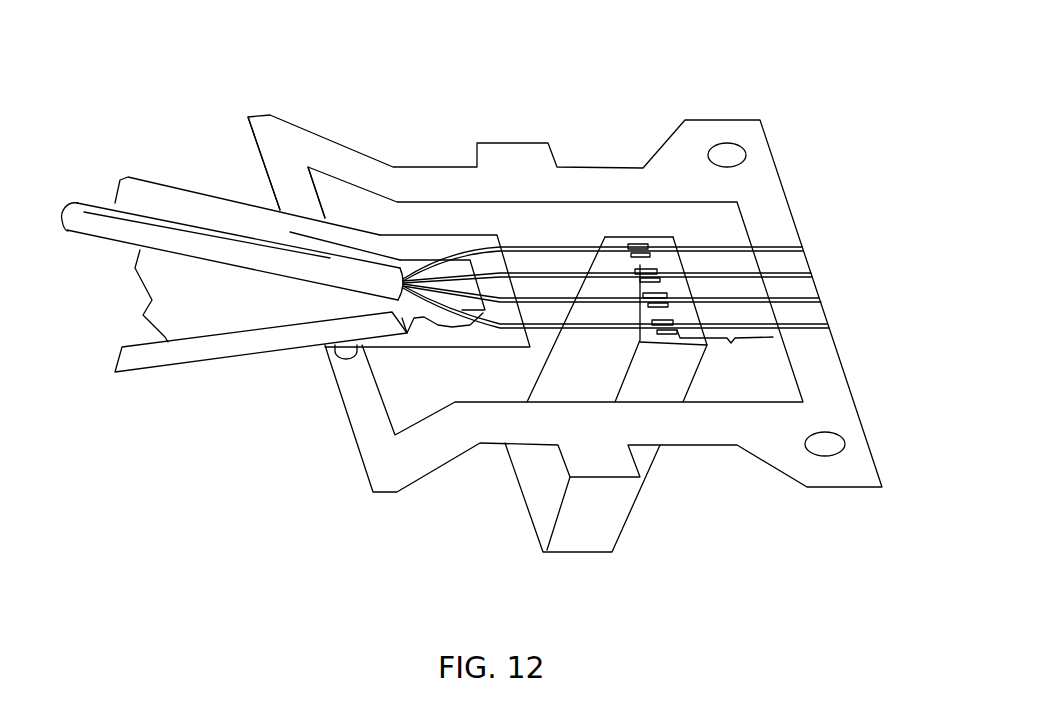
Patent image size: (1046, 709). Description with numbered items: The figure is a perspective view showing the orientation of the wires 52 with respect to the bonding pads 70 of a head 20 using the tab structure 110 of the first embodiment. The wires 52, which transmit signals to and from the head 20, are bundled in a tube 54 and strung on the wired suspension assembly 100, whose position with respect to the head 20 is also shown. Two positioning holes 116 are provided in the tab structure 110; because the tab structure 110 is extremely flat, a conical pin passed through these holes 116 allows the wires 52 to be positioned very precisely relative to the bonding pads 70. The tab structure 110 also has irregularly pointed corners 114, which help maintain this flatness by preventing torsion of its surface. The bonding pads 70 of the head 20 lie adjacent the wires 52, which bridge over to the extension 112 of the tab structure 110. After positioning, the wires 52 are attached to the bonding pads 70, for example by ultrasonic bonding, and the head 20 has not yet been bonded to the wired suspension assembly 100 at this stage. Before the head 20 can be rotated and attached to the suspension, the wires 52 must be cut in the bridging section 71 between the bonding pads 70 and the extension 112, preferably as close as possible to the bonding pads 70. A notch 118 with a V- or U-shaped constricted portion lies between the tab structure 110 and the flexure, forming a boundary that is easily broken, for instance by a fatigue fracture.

The tab structure 110 is at (448, 133).
The irregularly pointed corners 114 is at (313, 112).
The holes 116 is at (728, 153).
The notch 118 is at (470, 387).
The tube 54 is at (220, 250).
The wired suspension assembly 100 is at (203, 362).
The wires 52 is at (542, 323).
The extension 112 is at (802, 272).
The bonding pads 70 is at (678, 332).
The bridging section 71 is at (725, 351).
The head 20 is at (597, 518).